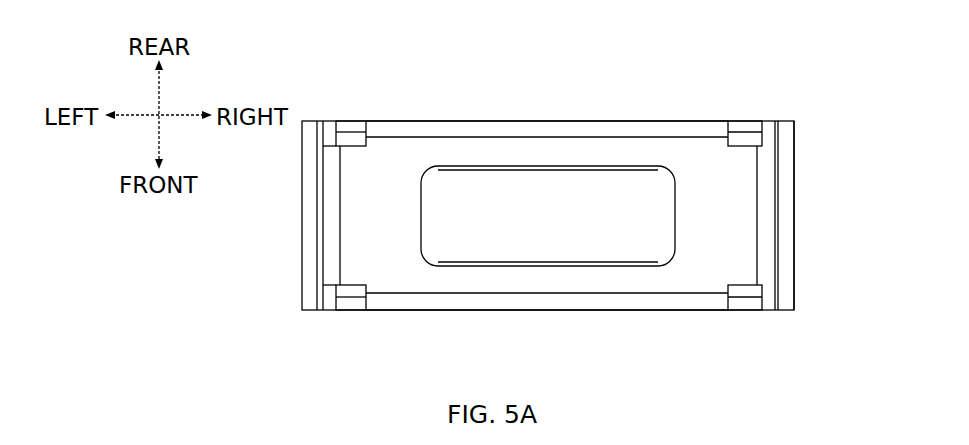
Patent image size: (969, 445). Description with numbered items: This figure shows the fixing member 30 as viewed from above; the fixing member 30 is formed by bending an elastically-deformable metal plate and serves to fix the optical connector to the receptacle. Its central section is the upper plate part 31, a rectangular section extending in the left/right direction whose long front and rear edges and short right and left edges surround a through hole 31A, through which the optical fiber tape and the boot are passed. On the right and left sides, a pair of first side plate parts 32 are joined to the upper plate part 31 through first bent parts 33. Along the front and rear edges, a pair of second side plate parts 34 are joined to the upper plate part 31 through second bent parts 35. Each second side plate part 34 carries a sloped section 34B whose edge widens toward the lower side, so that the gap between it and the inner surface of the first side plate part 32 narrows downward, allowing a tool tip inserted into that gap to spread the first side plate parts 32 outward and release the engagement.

The fixing member 30 is at (803, 110).
The upper plate part 31 is at (387, 163).
The through hole 31A is at (667, 212).
The first side plate part 32 is at (770, 297).
The first bent part 33 is at (487, 130).
The second side plate part 34 is at (473, 313).
The sloped section 34B is at (352, 125).
The second bent part 35 is at (565, 118).